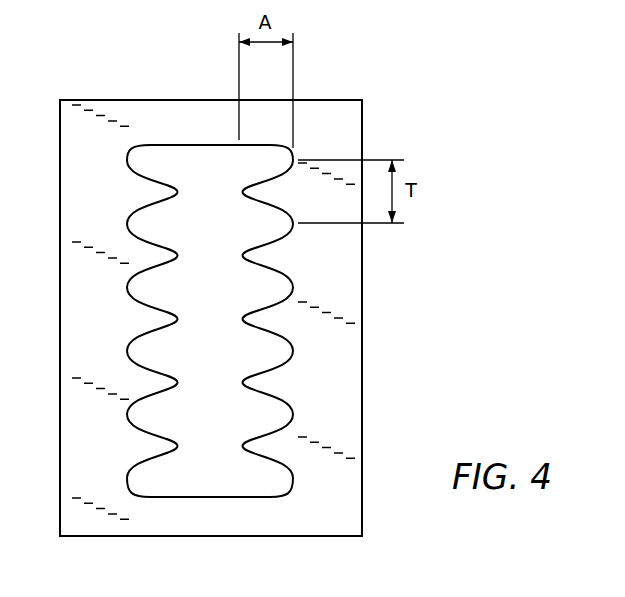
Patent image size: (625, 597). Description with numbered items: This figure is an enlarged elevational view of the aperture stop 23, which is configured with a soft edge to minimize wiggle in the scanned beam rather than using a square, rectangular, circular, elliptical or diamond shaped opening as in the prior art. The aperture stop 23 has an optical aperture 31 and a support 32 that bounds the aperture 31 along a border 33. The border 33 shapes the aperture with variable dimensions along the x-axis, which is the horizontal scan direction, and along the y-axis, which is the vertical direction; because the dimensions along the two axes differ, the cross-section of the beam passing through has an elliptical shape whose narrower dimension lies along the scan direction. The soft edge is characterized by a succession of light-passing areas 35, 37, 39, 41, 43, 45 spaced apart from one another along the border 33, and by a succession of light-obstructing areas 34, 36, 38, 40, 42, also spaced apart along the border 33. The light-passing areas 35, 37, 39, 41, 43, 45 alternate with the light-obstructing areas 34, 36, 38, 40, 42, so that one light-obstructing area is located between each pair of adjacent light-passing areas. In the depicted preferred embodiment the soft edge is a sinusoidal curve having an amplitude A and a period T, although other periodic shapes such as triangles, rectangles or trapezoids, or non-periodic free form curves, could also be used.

The aperture stop 23 is at (95, 93).
The optical aperture 31 is at (216, 146).
The support 32 is at (349, 265).
The border 33 is at (140, 144).
The light-obstructing area 34 is at (172, 192).
The light-passing area 35 is at (158, 146).
The light-obstructing area 36 is at (173, 256).
The light-passing area 37 is at (150, 210).
The light-obstructing area 38 is at (175, 320).
The light-passing area 39 is at (155, 272).
The light-obstructing area 40 is at (172, 392).
The light-passing area 41 is at (160, 335).
The light-obstructing area 42 is at (170, 450).
The light-passing area 43 is at (160, 402).
The light-passing area 45 is at (158, 467).